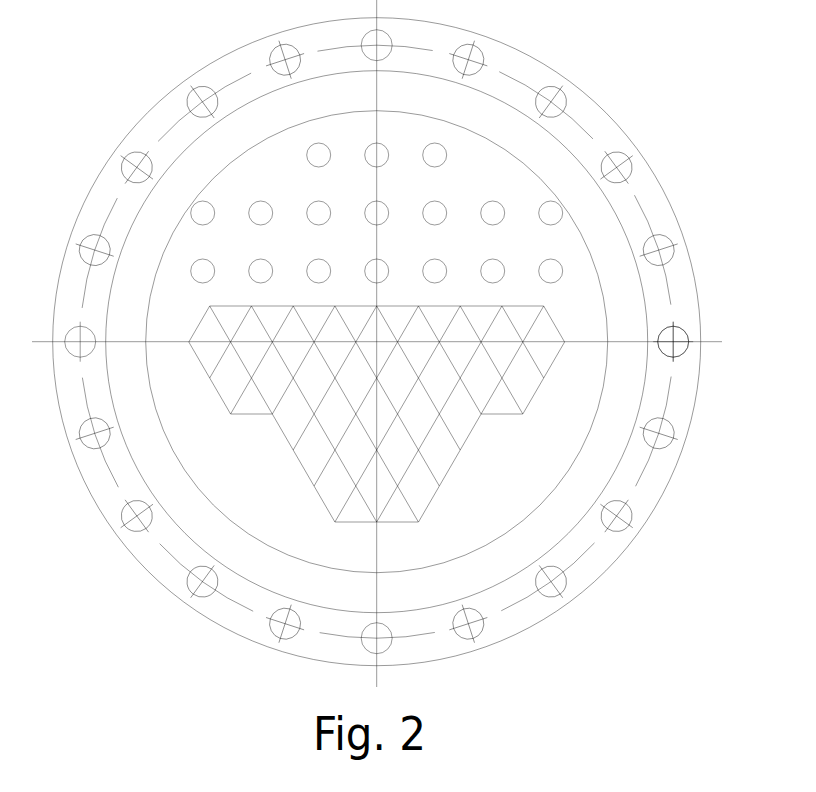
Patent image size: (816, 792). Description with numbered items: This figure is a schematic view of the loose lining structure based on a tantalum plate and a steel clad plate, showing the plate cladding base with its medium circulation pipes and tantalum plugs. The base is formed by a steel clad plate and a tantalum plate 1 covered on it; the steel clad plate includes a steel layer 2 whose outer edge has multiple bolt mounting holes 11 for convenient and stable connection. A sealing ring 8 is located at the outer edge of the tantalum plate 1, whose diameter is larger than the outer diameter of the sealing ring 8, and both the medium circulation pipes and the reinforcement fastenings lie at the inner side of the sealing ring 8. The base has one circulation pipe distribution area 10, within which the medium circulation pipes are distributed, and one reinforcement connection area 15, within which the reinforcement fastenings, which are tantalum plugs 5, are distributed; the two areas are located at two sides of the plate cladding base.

The tantalum plate 1 is at (178, 289).
The steel layer 2 is at (142, 130).
The tantalum plug 5 is at (317, 153).
The sealing ring 8 is at (620, 299).
The circulation pipe distribution area 10 is at (458, 412).
The bolt mounting holes 11 is at (552, 102).
The reinforcement connection area 15 is at (402, 190).